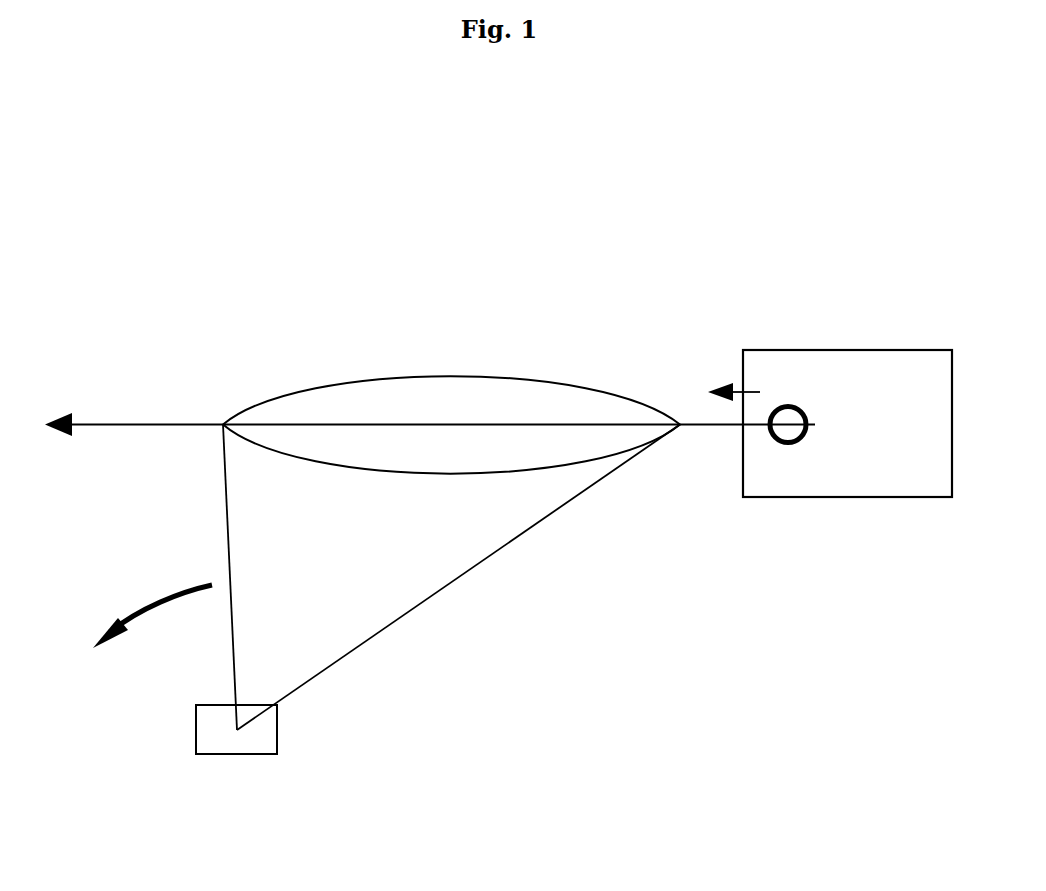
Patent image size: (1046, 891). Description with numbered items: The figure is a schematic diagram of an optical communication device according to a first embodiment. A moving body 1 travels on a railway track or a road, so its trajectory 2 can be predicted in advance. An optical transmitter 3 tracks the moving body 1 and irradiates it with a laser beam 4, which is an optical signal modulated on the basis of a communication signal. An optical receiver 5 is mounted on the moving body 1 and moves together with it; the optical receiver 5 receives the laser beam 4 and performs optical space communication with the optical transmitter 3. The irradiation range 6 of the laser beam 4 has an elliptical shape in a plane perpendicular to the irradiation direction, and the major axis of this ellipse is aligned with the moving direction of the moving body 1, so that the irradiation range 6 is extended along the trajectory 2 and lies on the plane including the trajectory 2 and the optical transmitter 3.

The moving body 1 is at (880, 350).
The trajectory 2 is at (139, 423).
The optical transmitter 3 is at (277, 730).
The laser beam 4 is at (473, 569).
The optical receiver 5 is at (789, 405).
The irradiation range 6 is at (450, 375).